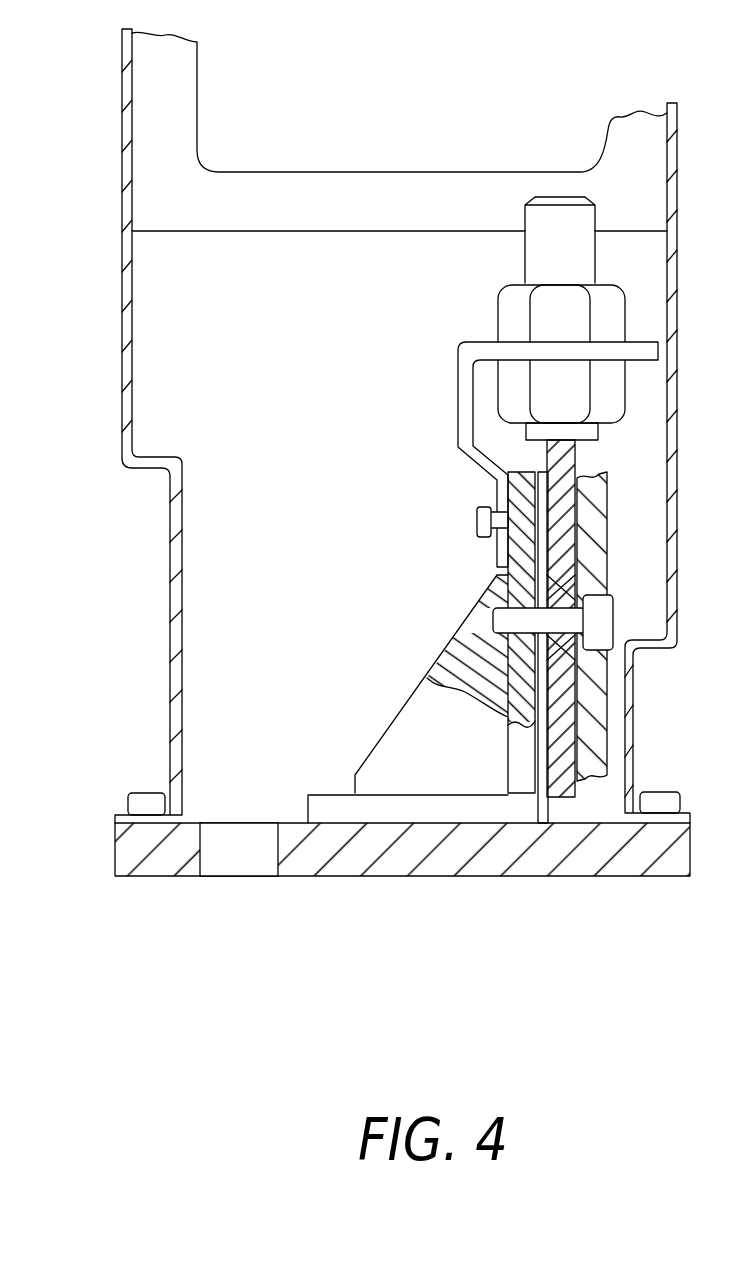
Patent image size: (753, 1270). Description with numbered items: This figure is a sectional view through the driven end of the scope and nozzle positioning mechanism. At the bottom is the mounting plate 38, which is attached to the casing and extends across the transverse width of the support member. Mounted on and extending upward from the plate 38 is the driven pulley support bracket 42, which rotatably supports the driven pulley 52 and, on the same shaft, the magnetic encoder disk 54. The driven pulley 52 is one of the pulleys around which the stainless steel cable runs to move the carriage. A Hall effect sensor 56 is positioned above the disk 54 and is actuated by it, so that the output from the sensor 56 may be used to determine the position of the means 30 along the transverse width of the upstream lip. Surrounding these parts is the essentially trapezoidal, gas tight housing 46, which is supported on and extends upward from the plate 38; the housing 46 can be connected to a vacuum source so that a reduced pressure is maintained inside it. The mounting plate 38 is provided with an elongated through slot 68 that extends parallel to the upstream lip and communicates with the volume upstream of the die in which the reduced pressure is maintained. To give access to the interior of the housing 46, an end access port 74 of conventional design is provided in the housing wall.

The means 30 is at (416, 432).
The mounting plate 38 is at (115, 858).
The driven pulley support bracket 42 is at (427, 722).
The gas tight housing 46 is at (153, 83).
The driven pulley 52 is at (600, 505).
The magnetic encoder disk 54 is at (565, 798).
The Hall effect sensor 56 is at (523, 270).
The elongated through slot 68 is at (242, 888).
The end access port 74 is at (470, 172).